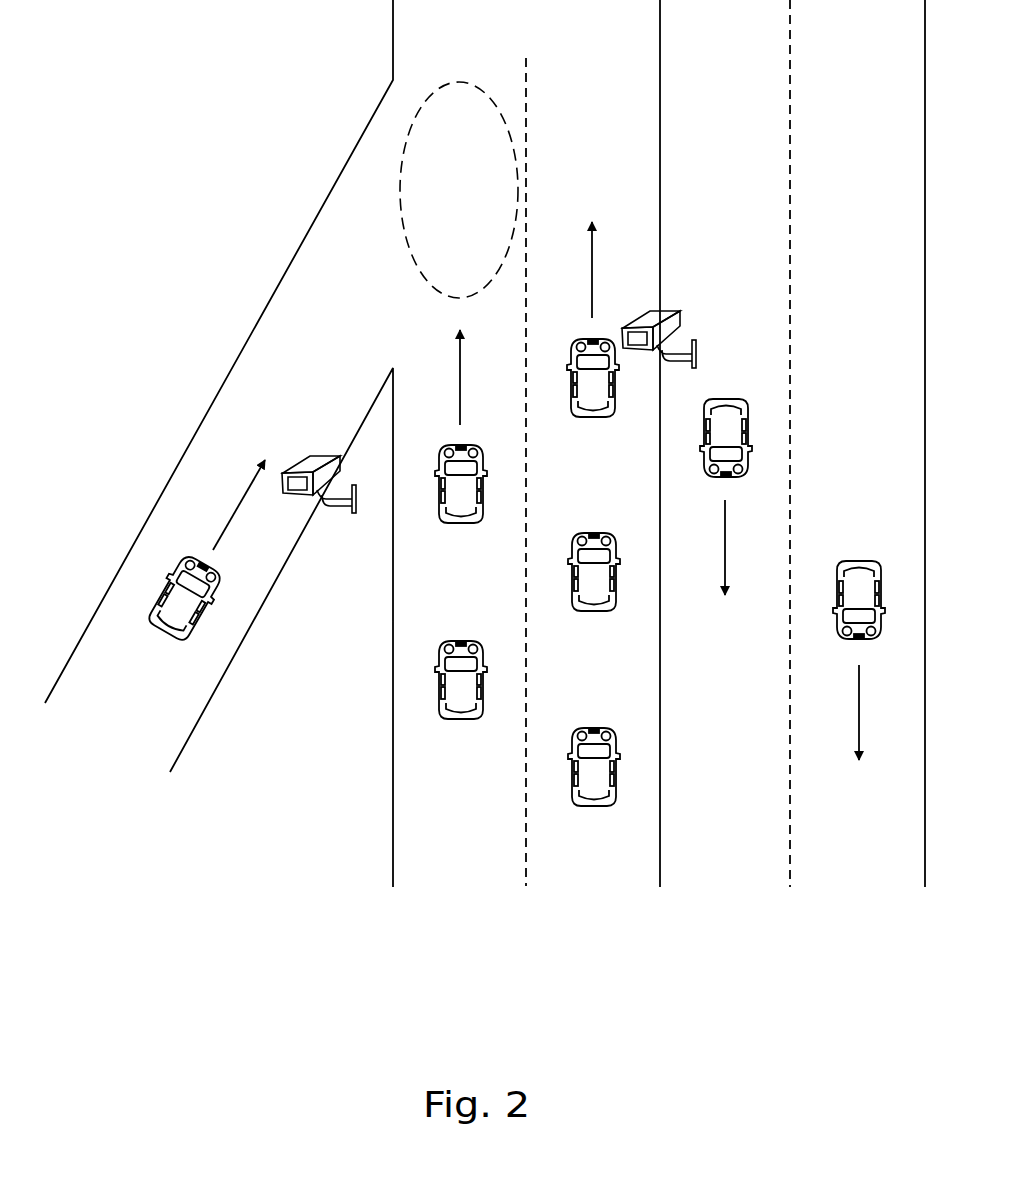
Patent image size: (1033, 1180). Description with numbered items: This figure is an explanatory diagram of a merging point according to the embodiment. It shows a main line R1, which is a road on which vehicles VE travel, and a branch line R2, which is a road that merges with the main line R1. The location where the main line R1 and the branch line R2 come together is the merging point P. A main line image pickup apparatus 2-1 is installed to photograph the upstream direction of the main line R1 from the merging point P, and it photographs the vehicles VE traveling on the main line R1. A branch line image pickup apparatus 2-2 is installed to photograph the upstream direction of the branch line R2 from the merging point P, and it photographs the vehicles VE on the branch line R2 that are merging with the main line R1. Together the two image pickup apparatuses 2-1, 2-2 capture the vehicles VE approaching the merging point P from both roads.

The merging point P is at (459, 82).
The main line image pickup apparatus 2-1 is at (665, 310).
The branch line image pickup apparatus 2-2 is at (333, 455).
The main line R1 is at (528, 897).
The branch line R2 is at (118, 718).
The vehicles VE is at (461, 523).